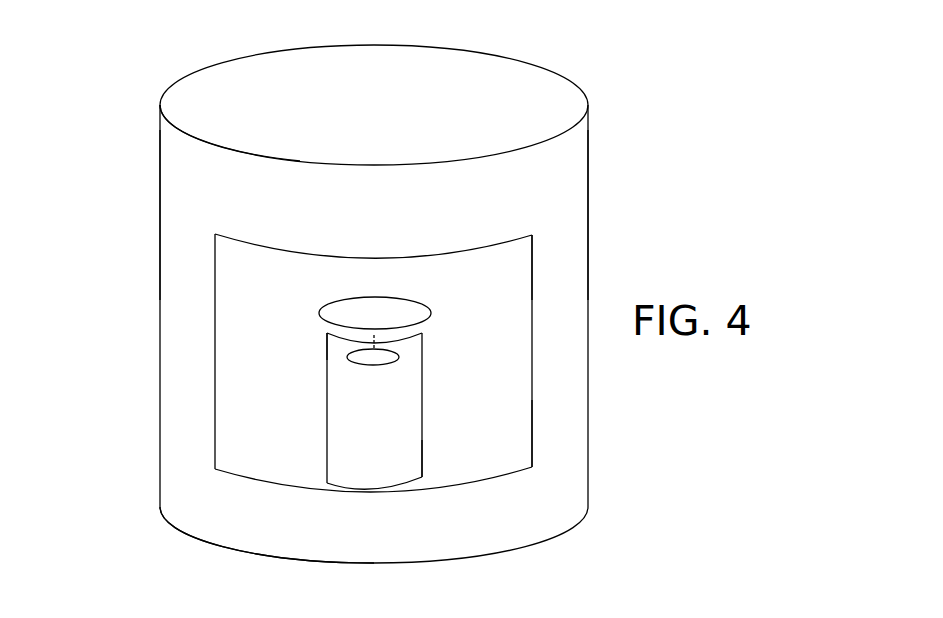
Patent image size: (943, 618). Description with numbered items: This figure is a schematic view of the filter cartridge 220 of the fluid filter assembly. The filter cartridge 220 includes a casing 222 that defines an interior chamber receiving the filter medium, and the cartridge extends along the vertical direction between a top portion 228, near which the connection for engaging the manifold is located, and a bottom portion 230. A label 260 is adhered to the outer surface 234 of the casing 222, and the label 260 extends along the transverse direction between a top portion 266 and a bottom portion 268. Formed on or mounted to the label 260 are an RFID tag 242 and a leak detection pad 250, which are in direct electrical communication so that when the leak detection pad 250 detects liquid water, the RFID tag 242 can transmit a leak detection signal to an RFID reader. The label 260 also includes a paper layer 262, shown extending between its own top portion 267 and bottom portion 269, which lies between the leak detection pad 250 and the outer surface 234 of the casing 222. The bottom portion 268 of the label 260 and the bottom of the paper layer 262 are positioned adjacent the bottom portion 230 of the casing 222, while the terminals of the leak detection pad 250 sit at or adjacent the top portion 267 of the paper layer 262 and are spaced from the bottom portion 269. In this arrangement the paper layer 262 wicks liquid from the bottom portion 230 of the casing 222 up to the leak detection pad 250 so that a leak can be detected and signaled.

The filter cartridge 220 is at (606, 62).
The casing 222 is at (183, 247).
The top portion 228 is at (159, 114).
The bottom portion 230 is at (159, 506).
The outer surface 234 is at (549, 182).
The RFID tag 242 is at (320, 312).
The leak detection pad 250 is at (399, 360).
The label 260 is at (290, 262).
The paper layer 262 is at (339, 413).
The top portion 266 is at (539, 236).
The top portion 267 is at (325, 337).
The bottom portion 268 is at (534, 466).
The bottom portion 269 is at (425, 470).